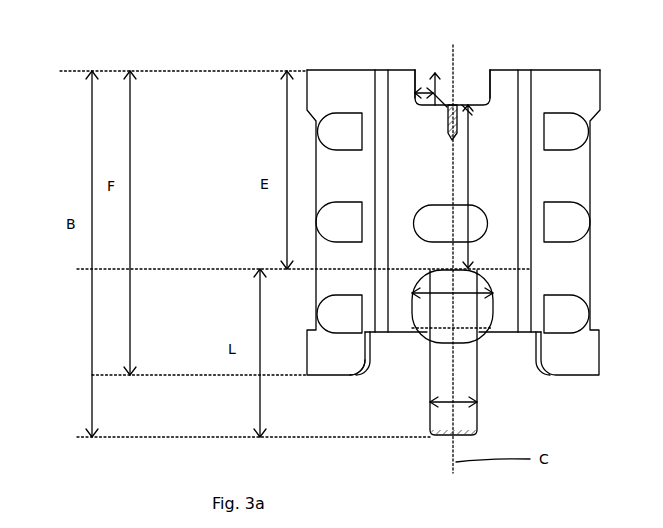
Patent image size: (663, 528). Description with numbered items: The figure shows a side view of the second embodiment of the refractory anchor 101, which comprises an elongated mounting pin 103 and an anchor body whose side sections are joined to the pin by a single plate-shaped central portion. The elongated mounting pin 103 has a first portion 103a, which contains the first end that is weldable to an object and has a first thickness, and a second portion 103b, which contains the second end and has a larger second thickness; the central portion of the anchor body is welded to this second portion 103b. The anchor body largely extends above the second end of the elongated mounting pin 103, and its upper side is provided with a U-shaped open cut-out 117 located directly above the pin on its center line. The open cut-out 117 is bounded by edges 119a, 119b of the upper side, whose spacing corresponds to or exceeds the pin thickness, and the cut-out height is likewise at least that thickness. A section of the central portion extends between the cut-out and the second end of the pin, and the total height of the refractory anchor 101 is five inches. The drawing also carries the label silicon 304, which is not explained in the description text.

The refractory anchor 101 is at (240, 87).
The open cut-out 117 is at (472, 52).
The edge of the upper side 119a is at (492, 70).
The edge of the upper side 119b is at (416, 70).
The silicon region 304 is at (449, 197).
The elongated mounting pin 103 is at (475, 348).
The first portion of the elongated mounting pin 103a is at (462, 423).
The second portion of the elongated mounting pin 103b is at (406, 347).